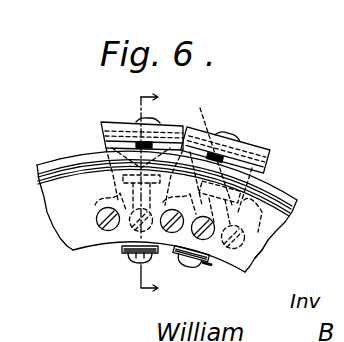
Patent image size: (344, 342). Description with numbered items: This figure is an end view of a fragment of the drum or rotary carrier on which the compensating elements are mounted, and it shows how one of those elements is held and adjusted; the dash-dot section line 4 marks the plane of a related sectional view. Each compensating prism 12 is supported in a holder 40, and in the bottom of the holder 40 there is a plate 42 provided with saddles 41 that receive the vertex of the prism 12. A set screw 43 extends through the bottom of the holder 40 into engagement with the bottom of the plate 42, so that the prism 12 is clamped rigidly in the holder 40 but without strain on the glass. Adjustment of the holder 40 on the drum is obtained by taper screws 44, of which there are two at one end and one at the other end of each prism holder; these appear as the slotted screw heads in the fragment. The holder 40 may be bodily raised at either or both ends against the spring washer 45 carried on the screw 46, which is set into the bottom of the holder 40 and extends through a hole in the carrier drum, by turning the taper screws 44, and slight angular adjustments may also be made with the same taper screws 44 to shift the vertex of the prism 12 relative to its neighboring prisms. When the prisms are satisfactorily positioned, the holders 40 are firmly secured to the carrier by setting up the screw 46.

The section line 4 is at (139, 203).
The compensating prism 12 is at (163, 134).
The holder 40 is at (106, 144).
The saddles 41 is at (262, 178).
The plate 42 is at (291, 195).
The set screw 43 is at (258, 237).
The taper screws 44 is at (127, 231).
The spring washer 45 is at (131, 253).
The screw 46 is at (136, 262).